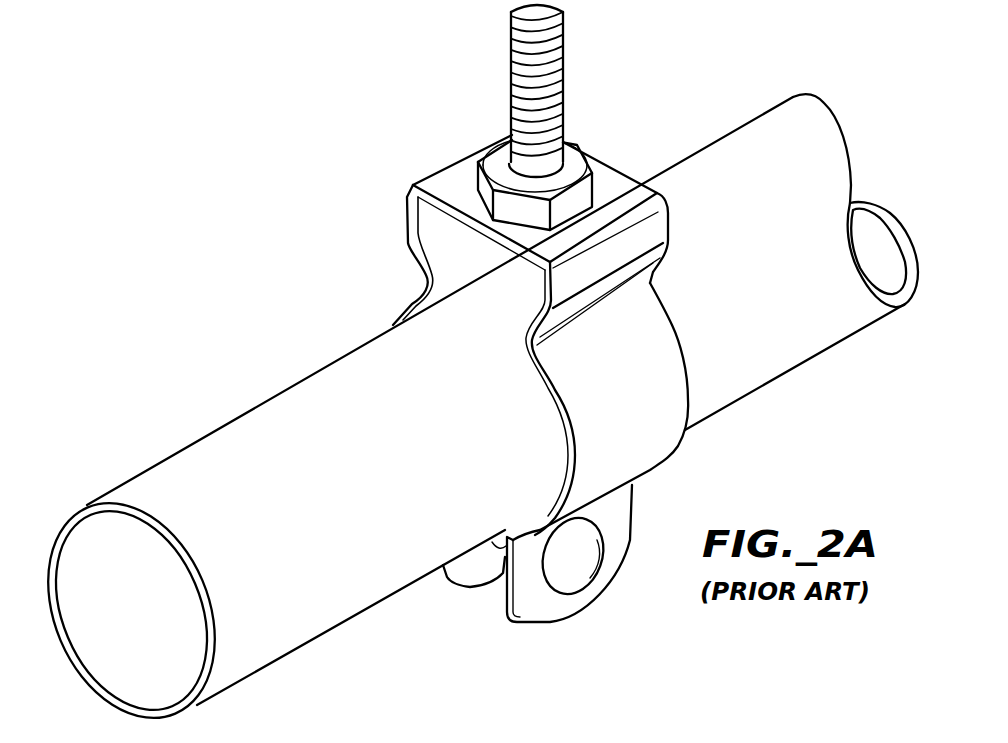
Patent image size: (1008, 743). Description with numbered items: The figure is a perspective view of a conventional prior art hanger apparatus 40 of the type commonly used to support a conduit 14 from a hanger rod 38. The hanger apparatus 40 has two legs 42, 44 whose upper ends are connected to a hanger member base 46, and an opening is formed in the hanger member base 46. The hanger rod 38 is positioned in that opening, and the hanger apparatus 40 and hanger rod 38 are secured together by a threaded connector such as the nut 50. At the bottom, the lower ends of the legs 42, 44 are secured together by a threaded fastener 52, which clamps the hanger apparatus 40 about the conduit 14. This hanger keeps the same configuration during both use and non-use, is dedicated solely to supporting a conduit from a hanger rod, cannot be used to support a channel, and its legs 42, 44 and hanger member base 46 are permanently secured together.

The conduit 14 is at (762, 125).
The hanger rod 38 is at (553, 64).
The hanger apparatus 40 is at (551, 390).
The leg 42 is at (404, 304).
The leg 44 is at (654, 323).
The hanger member base 46 is at (617, 177).
The nut 50 is at (500, 160).
The threaded fastener 52 is at (568, 585).